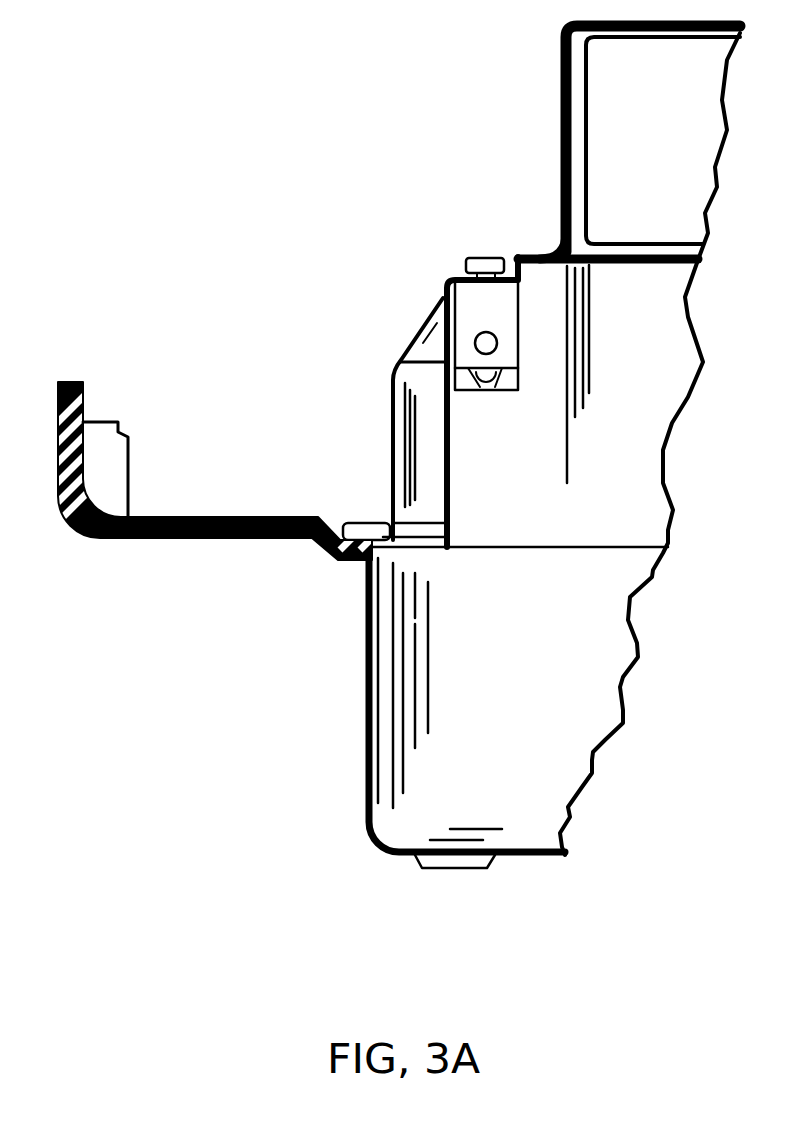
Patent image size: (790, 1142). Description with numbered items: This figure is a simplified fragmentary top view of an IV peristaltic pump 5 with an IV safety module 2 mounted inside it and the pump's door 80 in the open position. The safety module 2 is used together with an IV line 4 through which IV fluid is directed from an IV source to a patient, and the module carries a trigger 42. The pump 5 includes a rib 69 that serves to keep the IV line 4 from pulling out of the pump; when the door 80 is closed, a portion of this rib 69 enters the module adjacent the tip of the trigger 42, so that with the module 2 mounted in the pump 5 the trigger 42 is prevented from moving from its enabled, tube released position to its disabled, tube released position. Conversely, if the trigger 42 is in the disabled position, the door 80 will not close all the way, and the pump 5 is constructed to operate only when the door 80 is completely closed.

The IV safety module 2 is at (475, 305).
The IV line 4 is at (476, 336).
The trigger 42 is at (478, 257).
The IV peristaltic pump 5 is at (366, 656).
The rib 69 is at (105, 455).
The door 80 is at (203, 540).